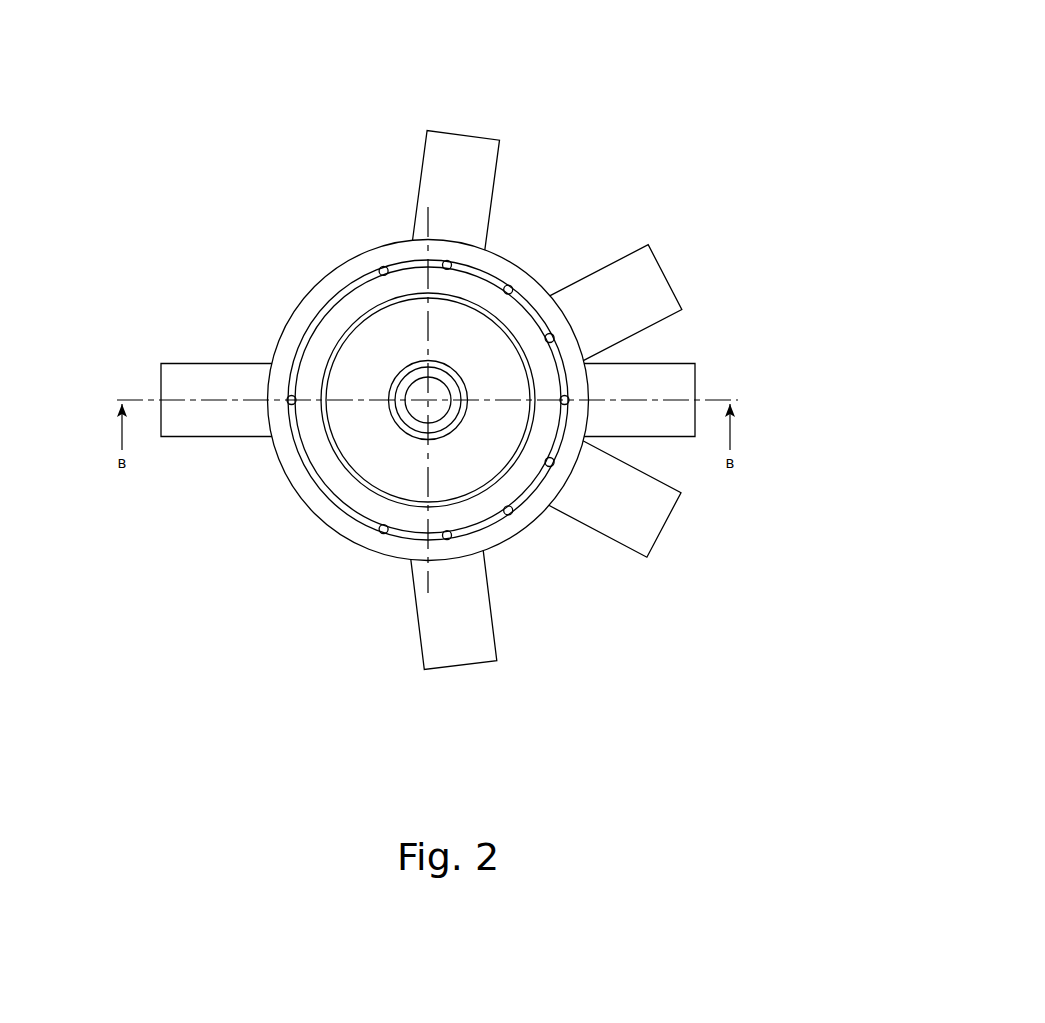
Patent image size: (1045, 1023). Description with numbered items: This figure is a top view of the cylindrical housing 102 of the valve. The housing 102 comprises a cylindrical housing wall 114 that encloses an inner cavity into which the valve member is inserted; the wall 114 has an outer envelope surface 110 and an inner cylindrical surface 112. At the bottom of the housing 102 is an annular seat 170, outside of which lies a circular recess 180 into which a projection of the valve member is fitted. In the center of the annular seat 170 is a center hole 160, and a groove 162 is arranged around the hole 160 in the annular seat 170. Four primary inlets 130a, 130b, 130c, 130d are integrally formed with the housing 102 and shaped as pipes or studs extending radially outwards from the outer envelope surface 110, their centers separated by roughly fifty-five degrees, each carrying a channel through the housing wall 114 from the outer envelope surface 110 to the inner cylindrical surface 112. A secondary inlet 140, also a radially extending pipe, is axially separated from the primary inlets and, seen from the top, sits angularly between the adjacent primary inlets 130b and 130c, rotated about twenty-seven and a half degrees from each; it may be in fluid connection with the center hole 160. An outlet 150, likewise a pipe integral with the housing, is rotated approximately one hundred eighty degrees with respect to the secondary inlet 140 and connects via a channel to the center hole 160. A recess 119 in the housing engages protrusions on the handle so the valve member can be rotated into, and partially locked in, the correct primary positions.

The cylindrical housing 102 is at (635, 190).
The outer envelope surface 110 is at (350, 255).
The inner cylindrical surface 112 is at (317, 322).
The cylindrical housing wall 114 is at (283, 347).
The recess 119 is at (506, 287).
The primary inlet 130a is at (455, 600).
The primary inlet 130b is at (632, 510).
The primary inlet 130c is at (637, 297).
The primary inlet 130d is at (456, 172).
The secondary inlet 140 is at (667, 387).
The outlet 150 is at (235, 412).
The center hole 160 is at (425, 402).
The groove 162 is at (450, 420).
The annular seat 170 is at (461, 476).
The circular recess 180 is at (321, 458).